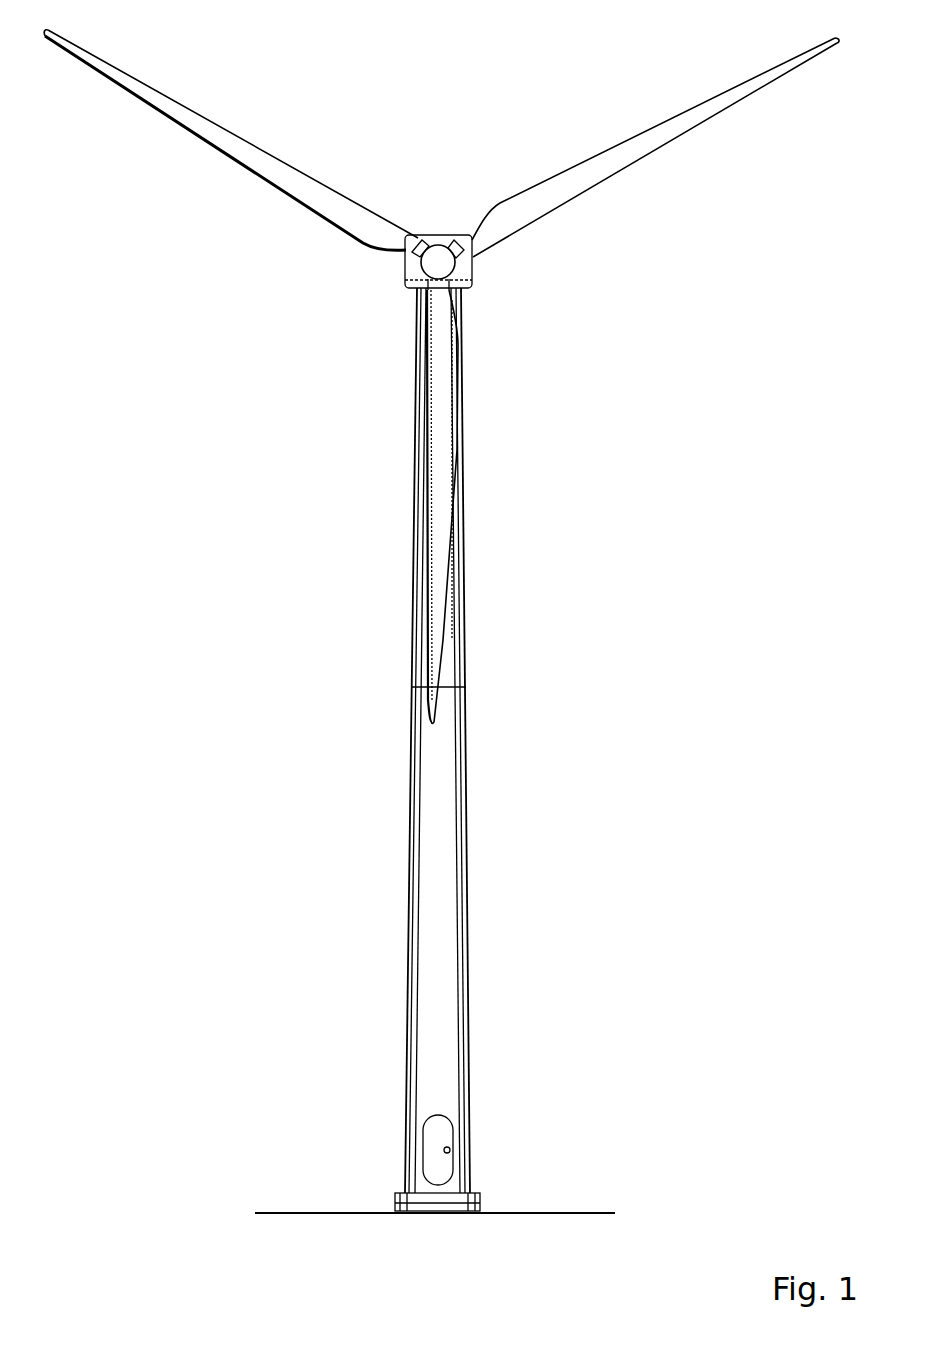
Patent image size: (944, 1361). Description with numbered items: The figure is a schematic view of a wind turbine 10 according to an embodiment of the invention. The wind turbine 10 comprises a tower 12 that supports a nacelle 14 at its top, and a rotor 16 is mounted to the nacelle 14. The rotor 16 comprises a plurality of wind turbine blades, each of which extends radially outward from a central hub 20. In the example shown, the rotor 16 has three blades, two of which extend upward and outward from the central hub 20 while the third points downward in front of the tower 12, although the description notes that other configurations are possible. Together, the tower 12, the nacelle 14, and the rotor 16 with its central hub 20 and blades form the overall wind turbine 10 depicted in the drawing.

The wind turbine 10 is at (316, 591).
The tower 12 is at (467, 735).
The nacelle 14 is at (470, 286).
The rotor 16 is at (312, 333).
The central hub 20 is at (430, 243).